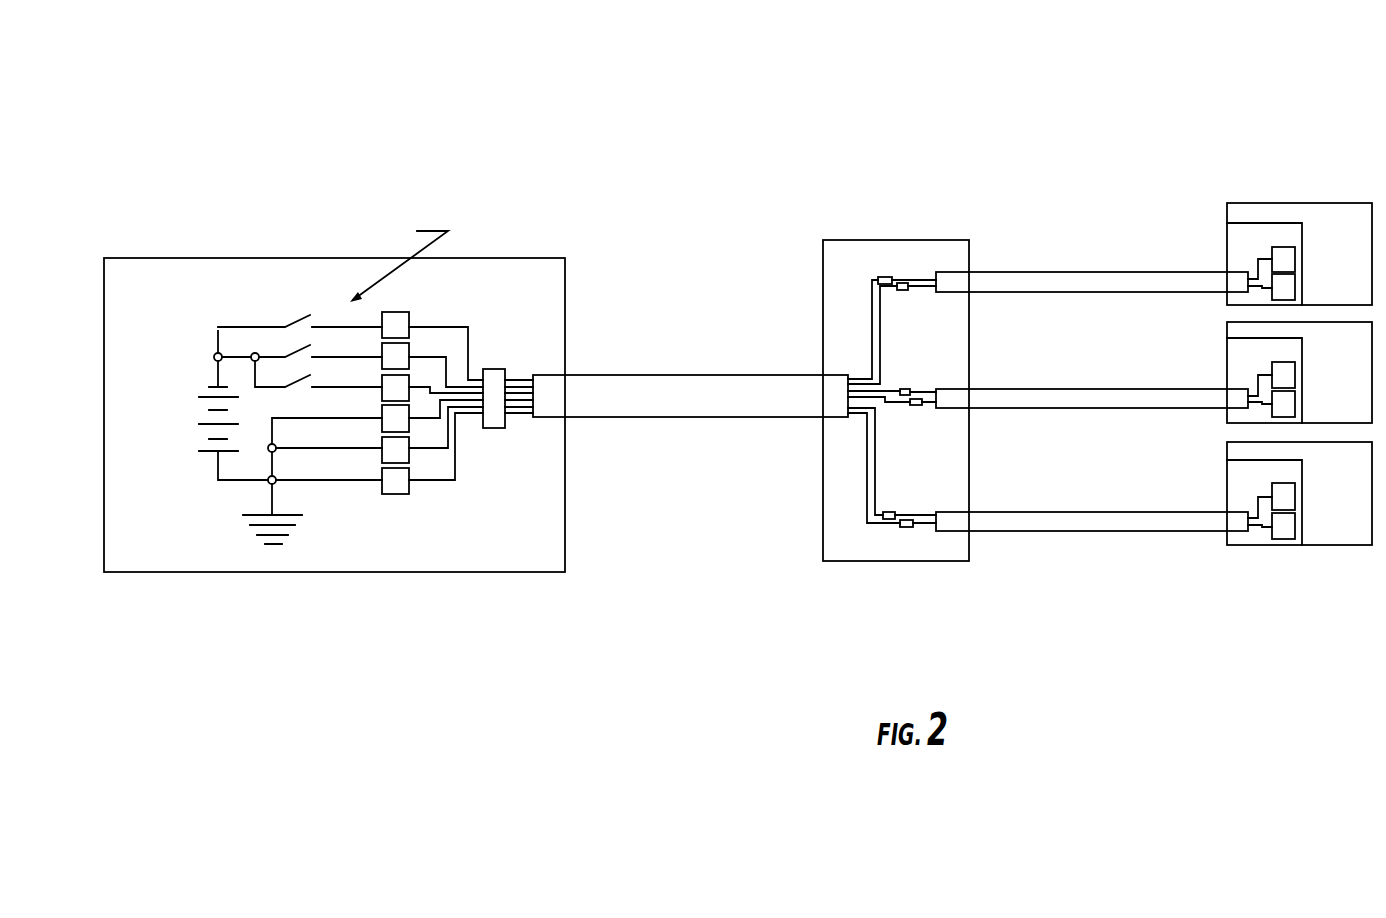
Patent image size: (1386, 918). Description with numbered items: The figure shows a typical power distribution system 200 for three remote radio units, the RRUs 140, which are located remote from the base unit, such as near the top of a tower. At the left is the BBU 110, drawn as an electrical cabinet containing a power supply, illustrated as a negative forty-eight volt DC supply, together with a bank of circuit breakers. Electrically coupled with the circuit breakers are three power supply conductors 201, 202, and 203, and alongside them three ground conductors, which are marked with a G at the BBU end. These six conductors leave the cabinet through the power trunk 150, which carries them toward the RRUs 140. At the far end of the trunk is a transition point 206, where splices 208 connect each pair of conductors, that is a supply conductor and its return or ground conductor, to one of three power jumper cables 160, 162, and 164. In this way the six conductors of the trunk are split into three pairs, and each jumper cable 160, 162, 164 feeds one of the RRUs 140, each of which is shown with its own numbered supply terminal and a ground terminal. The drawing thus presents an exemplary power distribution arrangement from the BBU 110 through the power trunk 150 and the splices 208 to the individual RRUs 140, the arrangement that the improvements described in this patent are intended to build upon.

The power distribution system 200 is at (350, 168).
The BBU 110 is at (253, 258).
The power supply conductor 201 is at (468, 327).
The power supply conductor 202 is at (468, 385).
The power supply conductor 203 is at (430, 388).
The power trunk 150 is at (798, 373).
The transition point 206 is at (893, 240).
The splices 208 is at (906, 534).
The power jumper cable 160 is at (1003, 272).
The power jumper cable 162 is at (1042, 389).
The power jumper cable 164 is at (1033, 512).
The RRUs 140 is at (1353, 203).